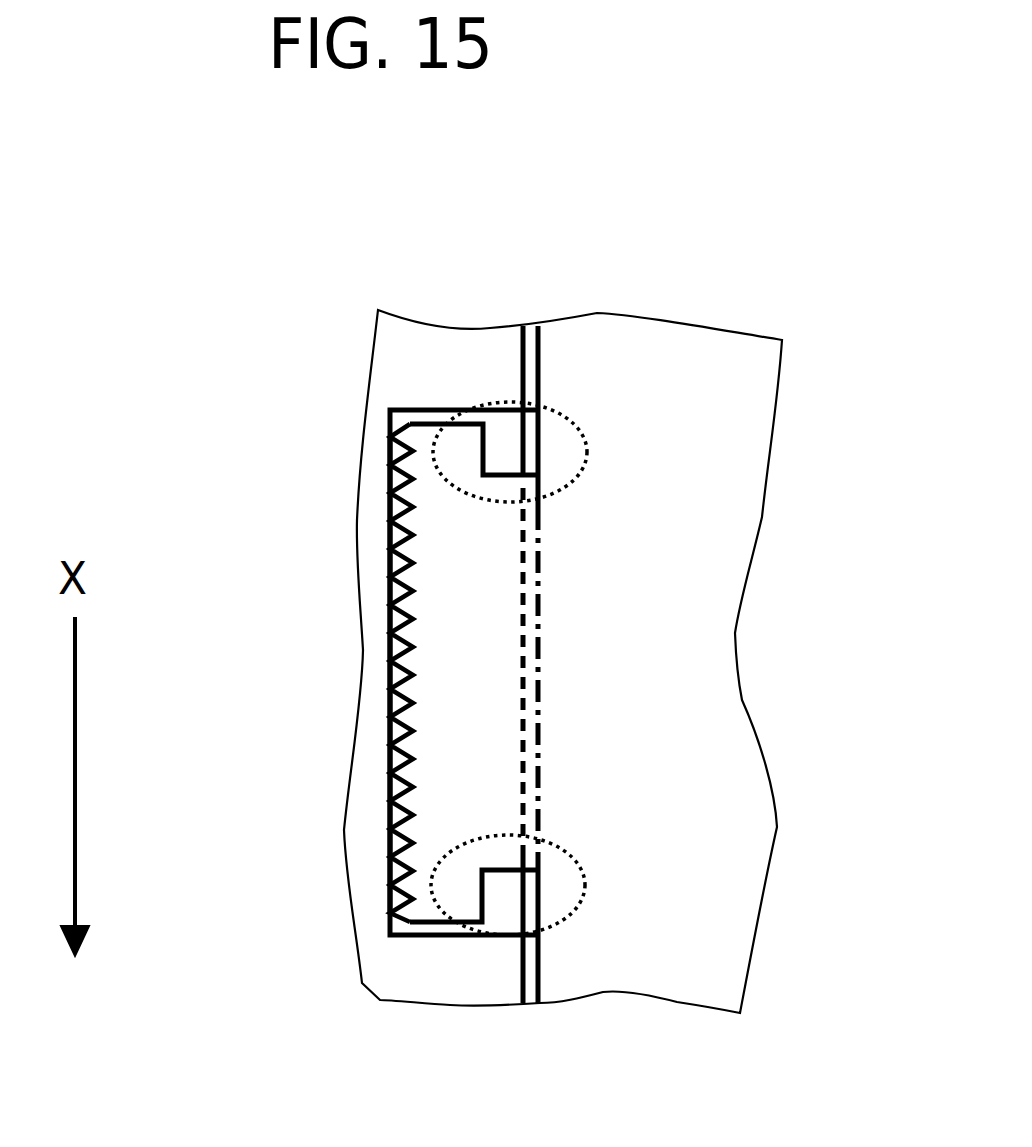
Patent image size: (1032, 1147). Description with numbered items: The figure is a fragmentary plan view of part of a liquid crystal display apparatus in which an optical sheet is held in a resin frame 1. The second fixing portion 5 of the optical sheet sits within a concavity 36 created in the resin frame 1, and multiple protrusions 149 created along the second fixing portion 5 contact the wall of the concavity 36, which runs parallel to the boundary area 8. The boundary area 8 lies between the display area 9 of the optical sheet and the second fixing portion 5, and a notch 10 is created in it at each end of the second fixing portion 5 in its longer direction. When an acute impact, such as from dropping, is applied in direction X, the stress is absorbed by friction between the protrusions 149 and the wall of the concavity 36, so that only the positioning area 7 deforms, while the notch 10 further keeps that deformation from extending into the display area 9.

The resin frame 1 is at (483, 970).
The second fixing portion 5 is at (455, 720).
The positioning area 7 is at (423, 925).
The boundary area 8 is at (538, 590).
The display area 9 is at (693, 503).
The notch 10 is at (588, 453).
The concavity 36 is at (398, 562).
The protrusions 149 is at (393, 662).